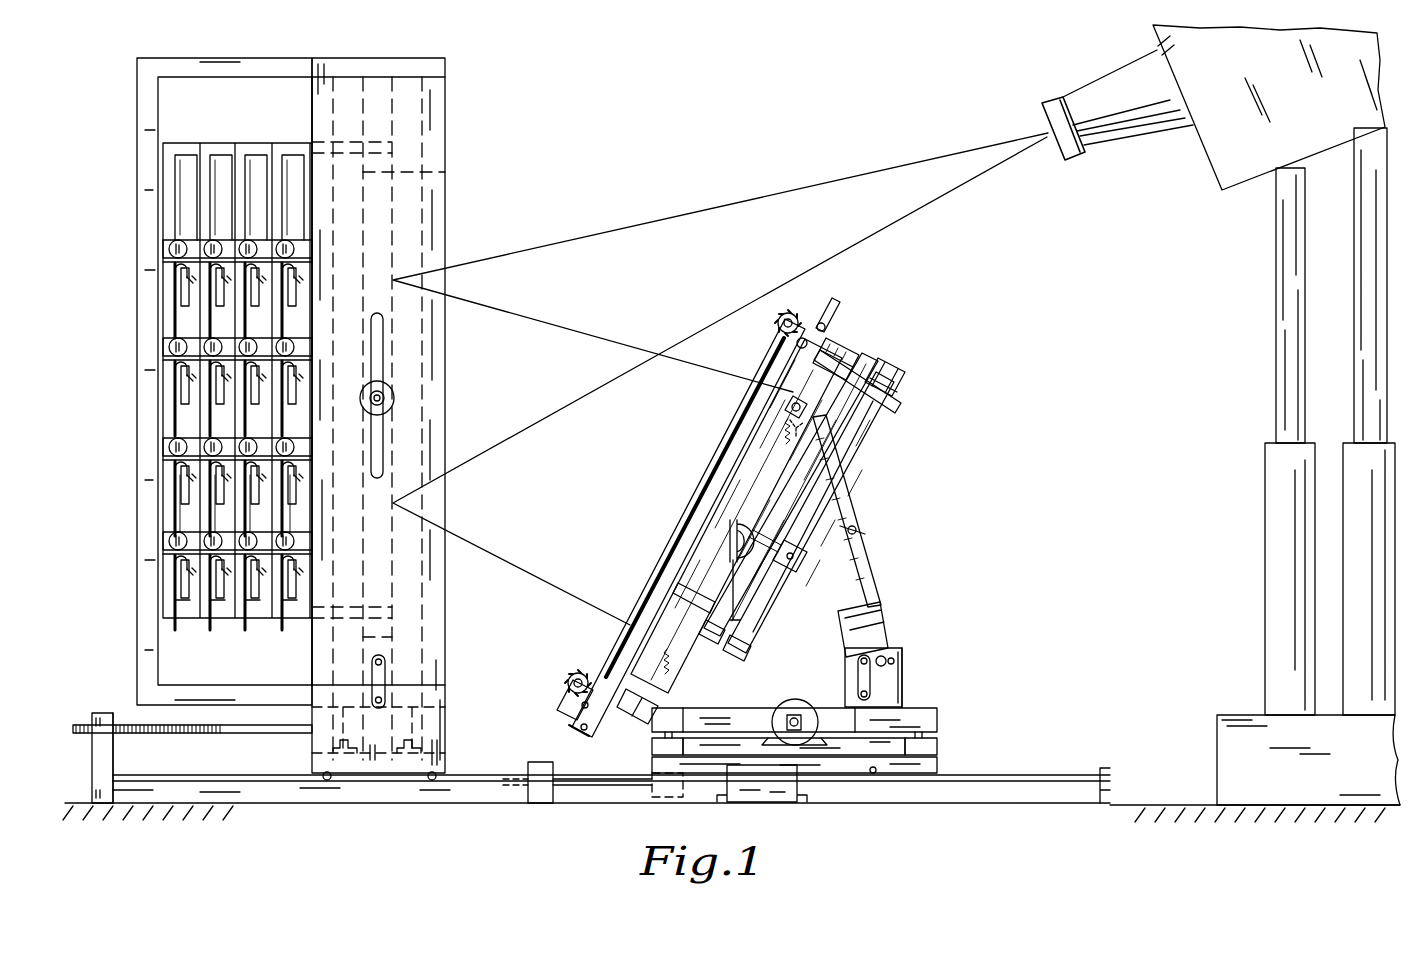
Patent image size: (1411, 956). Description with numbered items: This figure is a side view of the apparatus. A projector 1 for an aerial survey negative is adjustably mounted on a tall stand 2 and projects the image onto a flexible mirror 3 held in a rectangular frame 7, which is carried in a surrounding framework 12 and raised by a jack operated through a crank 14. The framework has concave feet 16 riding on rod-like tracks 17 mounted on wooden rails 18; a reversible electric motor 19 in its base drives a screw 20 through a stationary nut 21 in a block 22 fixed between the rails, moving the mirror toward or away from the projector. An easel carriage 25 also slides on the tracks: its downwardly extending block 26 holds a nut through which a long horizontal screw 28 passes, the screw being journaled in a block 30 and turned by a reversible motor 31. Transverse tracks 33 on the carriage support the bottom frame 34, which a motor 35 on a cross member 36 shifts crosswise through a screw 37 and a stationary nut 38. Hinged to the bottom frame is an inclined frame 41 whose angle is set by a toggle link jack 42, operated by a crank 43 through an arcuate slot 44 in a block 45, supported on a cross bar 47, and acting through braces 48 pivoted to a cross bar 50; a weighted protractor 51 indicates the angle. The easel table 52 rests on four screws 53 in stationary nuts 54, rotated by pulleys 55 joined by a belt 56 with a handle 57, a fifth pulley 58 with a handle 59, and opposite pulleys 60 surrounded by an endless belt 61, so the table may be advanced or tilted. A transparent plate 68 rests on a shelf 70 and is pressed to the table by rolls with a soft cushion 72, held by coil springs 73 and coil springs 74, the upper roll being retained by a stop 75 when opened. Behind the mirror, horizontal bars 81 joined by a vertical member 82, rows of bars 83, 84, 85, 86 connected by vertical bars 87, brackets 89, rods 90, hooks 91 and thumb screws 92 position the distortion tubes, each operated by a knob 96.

The projector 1 is at (1215, 157).
The stand 2 is at (1265, 483).
The flexible mirror 3 is at (400, 346).
The rectangular frame 7 is at (390, 161).
The framework 12 is at (440, 123).
The crank 14 is at (378, 702).
The concave feet 16 is at (327, 782).
The tracks 17 is at (212, 775).
The wooden rails 18 is at (250, 790).
The reversible electric motor 19 is at (412, 727).
The screw 20 is at (248, 731).
The stationary nut 21 is at (95, 718).
The block 22 is at (108, 758).
The carriage 25 is at (940, 772).
The block 26 is at (662, 793).
The horizontal screw 28 is at (595, 793).
The block 30 is at (538, 765).
The reversible motor 31 is at (760, 793).
The tracks 33 is at (660, 742).
The bottom frame 34 is at (925, 712).
The reversible electric motor 35 is at (795, 700).
The cross member 36 is at (815, 757).
The screw 37 is at (805, 716).
The stationary nut 38 is at (780, 711).
The inclined frame 41 is at (642, 698).
The toggle link jack 42 is at (882, 636).
The crank 43 is at (858, 677).
The arcuate slot 44 is at (893, 664).
The block 45 is at (905, 690).
The cross bar 47 is at (873, 773).
The braces 48 is at (855, 571).
The cross bar 50 is at (795, 407).
The weighted protractor 51 is at (728, 538).
The easel table 52 is at (716, 482).
The screws 53 is at (830, 362).
The stationary nuts 54 is at (860, 365).
The pulleys 55 is at (715, 647).
The belt 56 is at (838, 442).
The handle 57 is at (903, 408).
The fifth pulley 58 is at (790, 556).
The handle 59 is at (858, 531).
The pulleys 60 is at (882, 430).
The endless belt 61 is at (845, 470).
The transparent plate 68 is at (735, 437).
The shelf 70 is at (570, 695).
The soft cushion 72 is at (790, 314).
The coil springs 73 is at (578, 709).
The coil springs 74 is at (795, 344).
The stop 75 is at (836, 307).
The horizontal bars 81 is at (305, 253).
The vertical member 82 is at (150, 642).
The horizontal bars 83 is at (296, 150).
The horizontal bars 84 is at (259, 150).
The horizontal bars 85 is at (222, 150).
The horizontal bars 86 is at (185, 150).
The vertical bars 87 is at (242, 205).
The brackets 89 is at (168, 556).
The rods 90 is at (178, 483).
The hooks 91 is at (293, 522).
The thumb screws 92 is at (180, 580).
The knob 96 is at (170, 250).